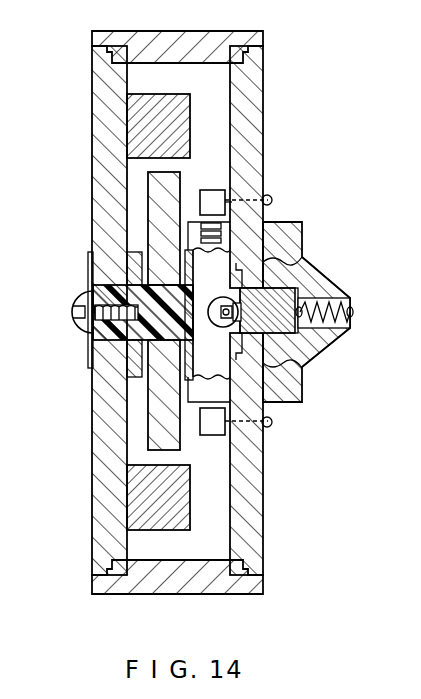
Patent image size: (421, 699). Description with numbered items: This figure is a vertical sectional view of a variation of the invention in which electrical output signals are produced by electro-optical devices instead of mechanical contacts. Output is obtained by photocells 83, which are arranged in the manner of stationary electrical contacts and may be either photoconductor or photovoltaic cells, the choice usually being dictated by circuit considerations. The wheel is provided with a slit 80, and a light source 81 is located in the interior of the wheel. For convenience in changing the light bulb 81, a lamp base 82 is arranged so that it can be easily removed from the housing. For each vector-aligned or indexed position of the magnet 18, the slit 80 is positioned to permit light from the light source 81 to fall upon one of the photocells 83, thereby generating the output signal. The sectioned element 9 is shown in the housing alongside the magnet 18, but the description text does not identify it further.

The magnet block 9 is at (130, 125).
The magnet 18 is at (150, 213).
The slit 80 is at (220, 237).
The light source 81 is at (222, 328).
The lamp base 82 is at (320, 352).
The photocells 83 is at (215, 190).